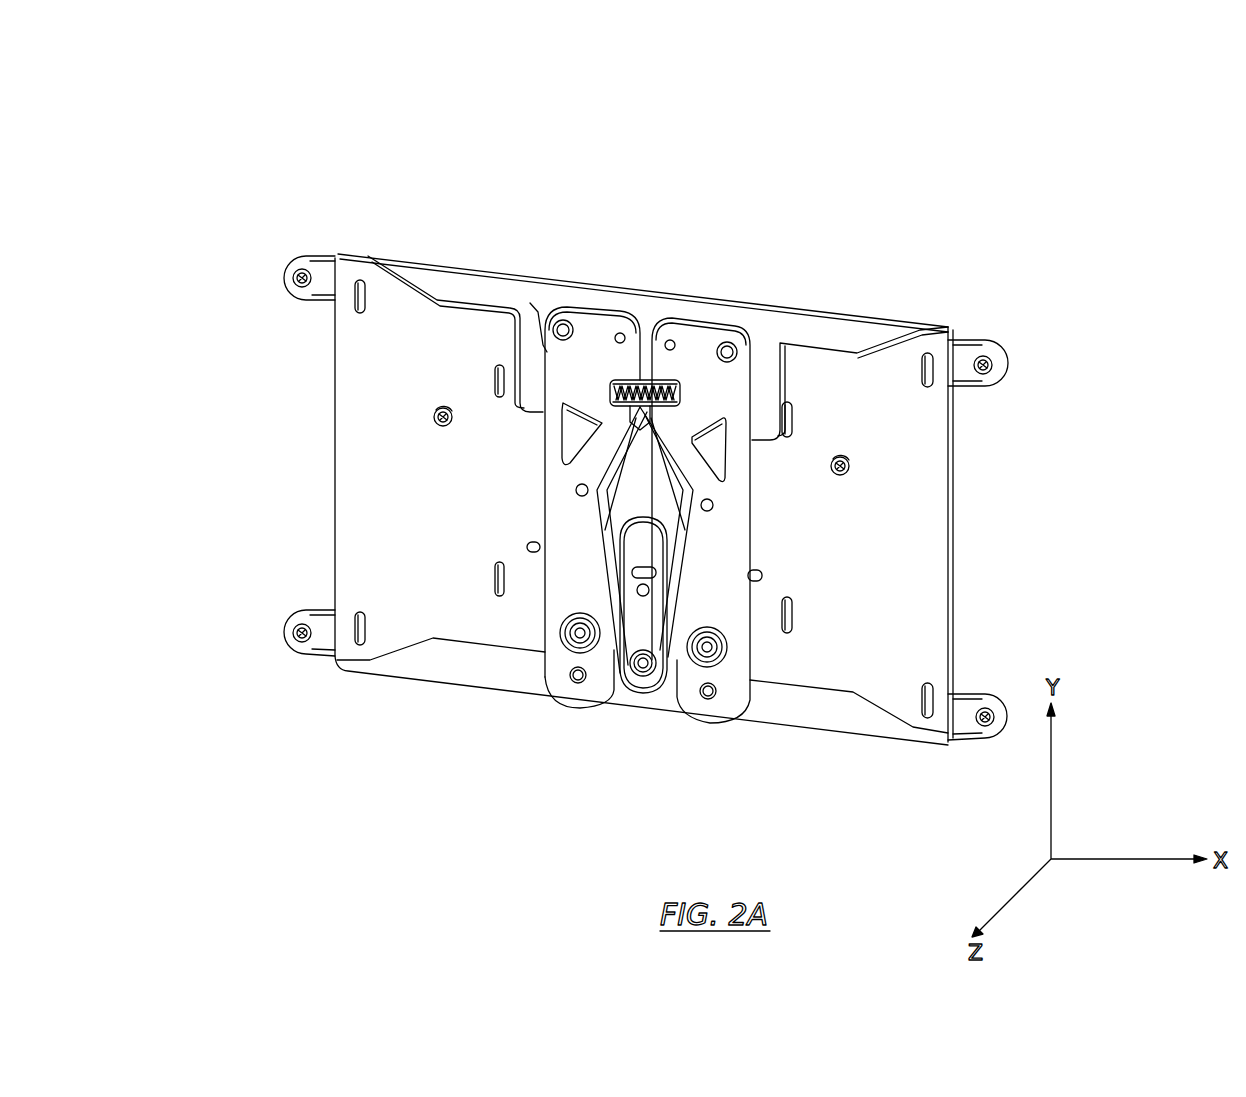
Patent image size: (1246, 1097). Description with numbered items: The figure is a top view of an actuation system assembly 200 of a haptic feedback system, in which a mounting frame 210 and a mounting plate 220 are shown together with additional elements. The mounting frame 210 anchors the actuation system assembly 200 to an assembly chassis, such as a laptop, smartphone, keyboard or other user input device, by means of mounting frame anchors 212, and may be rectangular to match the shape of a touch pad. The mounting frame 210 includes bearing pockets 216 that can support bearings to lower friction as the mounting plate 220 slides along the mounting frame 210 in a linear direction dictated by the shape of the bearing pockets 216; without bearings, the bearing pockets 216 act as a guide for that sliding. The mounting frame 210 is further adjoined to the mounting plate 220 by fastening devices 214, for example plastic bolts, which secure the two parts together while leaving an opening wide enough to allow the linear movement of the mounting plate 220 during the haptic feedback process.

The actuation system assembly 200 is at (877, 202).
The mounting frame 210 is at (880, 382).
The mounting frame anchors 212 is at (288, 640).
The fastening device 214 is at (850, 464).
The bearing pockets 216 is at (793, 610).
The mounting plate 220 is at (482, 688).